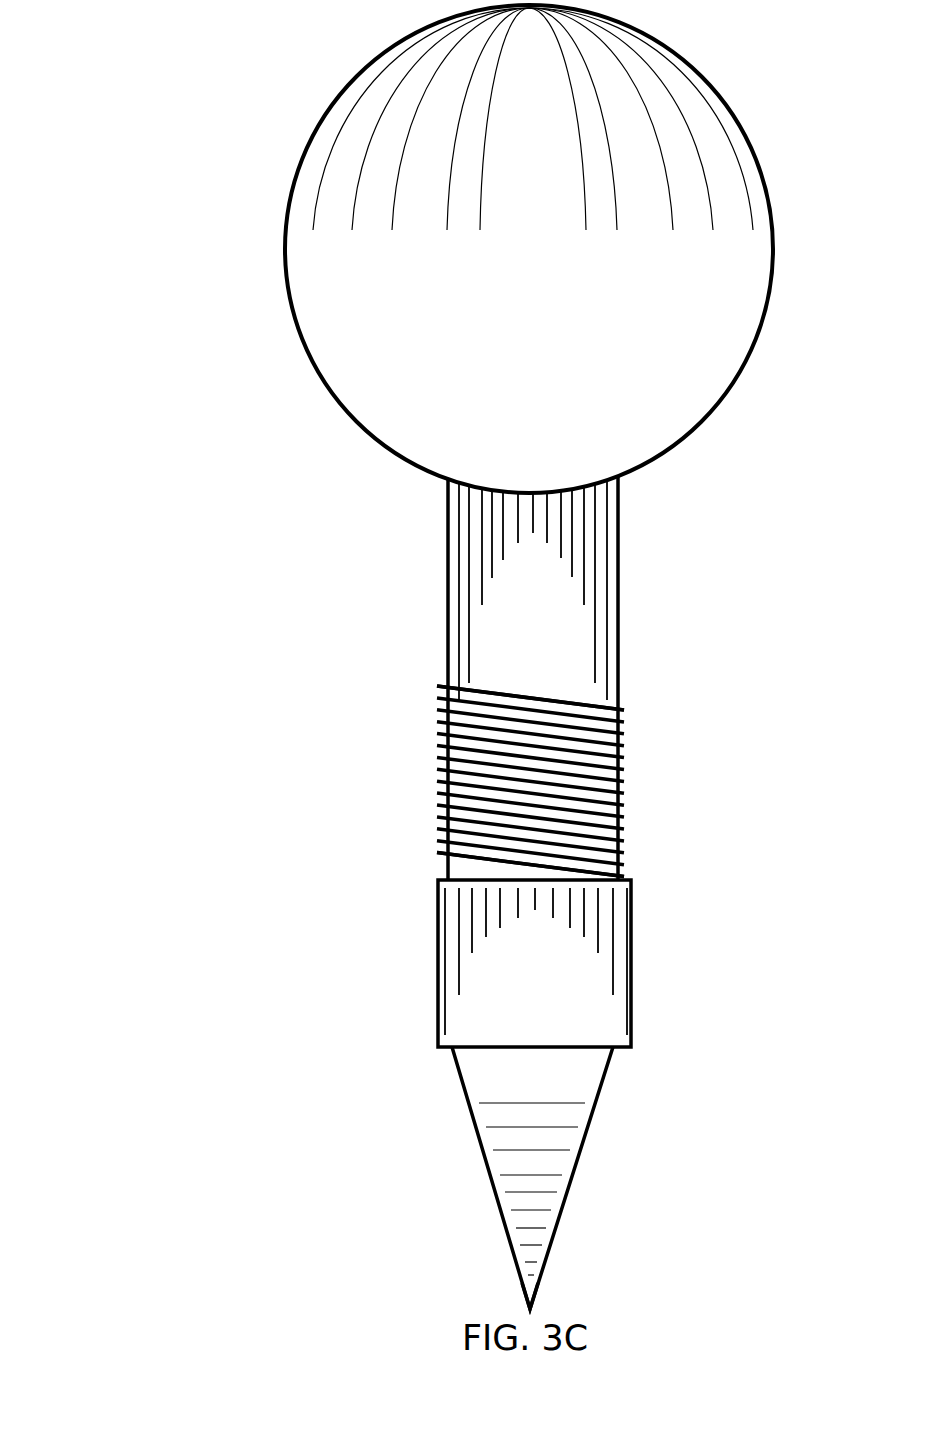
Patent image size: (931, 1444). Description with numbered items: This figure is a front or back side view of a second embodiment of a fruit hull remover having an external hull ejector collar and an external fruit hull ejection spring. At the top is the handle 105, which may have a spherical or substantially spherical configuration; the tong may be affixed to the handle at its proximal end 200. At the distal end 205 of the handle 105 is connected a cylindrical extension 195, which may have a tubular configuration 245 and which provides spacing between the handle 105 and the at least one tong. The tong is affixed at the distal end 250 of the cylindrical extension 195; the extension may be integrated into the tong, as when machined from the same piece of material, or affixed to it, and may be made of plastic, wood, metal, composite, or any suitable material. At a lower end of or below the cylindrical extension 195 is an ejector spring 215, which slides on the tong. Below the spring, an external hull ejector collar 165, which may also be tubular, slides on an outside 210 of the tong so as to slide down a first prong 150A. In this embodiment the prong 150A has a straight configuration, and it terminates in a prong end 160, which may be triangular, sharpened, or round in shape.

The proximal end 200 is at (435, 657).
The handle 105 is at (529, 249).
The cylindrical extension 195 is at (422, 531).
The distal end 205 is at (550, 491).
The tubular configuration 245 is at (533, 610).
The distal end 250 is at (548, 685).
The ejector spring 215 is at (414, 732).
The outside 210 is at (426, 871).
The external hull ejector collar 165 is at (534, 963).
The first of an at least one prong 150A is at (434, 1087).
The prong end 160 is at (512, 1302).